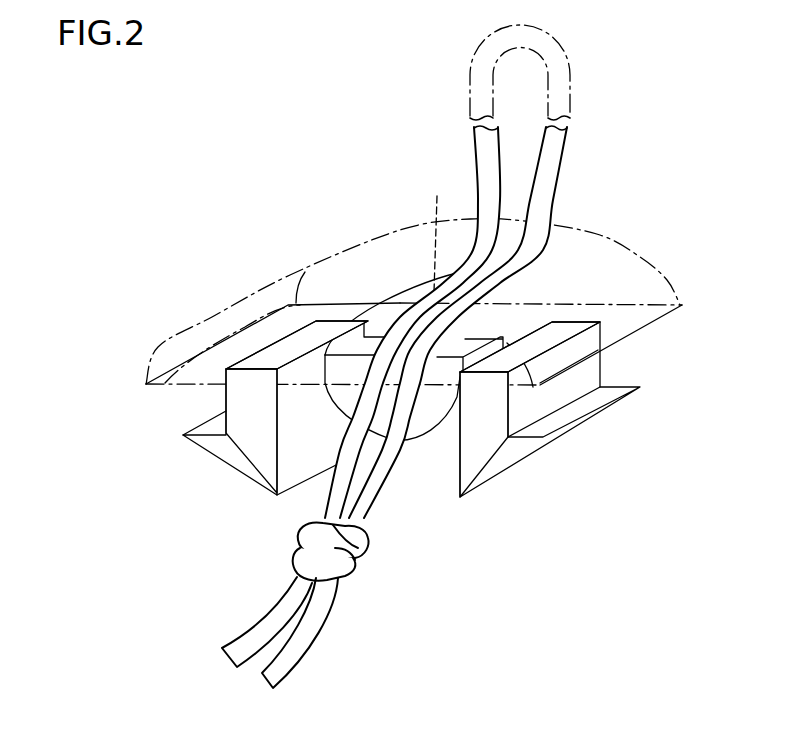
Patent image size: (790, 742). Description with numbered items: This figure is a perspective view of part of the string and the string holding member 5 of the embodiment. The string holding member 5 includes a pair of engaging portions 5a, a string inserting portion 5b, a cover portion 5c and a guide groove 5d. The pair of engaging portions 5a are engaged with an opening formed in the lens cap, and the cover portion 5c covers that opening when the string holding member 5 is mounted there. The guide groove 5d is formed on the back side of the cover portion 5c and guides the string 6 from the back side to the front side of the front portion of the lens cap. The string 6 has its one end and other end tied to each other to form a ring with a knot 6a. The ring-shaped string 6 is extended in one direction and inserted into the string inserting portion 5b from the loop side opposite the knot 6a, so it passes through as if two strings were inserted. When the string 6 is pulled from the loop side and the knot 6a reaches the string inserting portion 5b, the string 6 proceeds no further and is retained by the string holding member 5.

The string holding member 5 is at (369, 173).
The engaging portions 5a is at (243, 450).
The string inserting portion 5b is at (424, 414).
The cover portion 5c is at (615, 243).
The guide groove 5d is at (372, 237).
The string 6 is at (557, 147).
The knot 6a is at (355, 567).